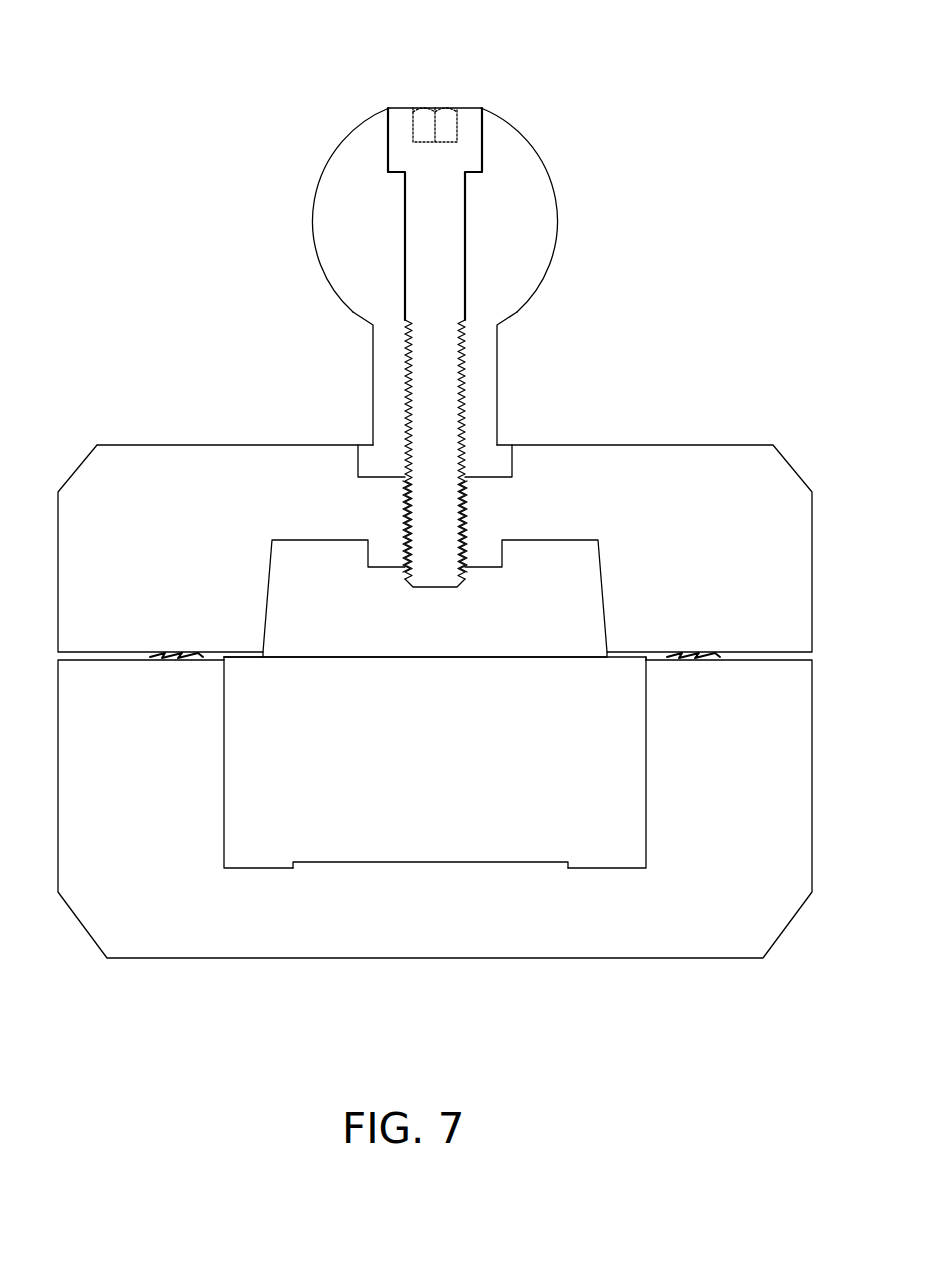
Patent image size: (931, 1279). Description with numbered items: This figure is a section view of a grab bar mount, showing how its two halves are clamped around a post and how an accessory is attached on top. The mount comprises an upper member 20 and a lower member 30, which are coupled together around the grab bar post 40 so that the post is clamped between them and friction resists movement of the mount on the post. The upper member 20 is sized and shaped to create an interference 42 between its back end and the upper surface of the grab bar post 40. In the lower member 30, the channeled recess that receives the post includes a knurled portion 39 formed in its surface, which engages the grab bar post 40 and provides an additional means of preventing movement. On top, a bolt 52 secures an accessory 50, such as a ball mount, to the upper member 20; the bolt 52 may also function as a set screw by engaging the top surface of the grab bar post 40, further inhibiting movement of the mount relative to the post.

The upper member 20 is at (680, 488).
The lower member 30 is at (712, 903).
The knurled portion 39 is at (502, 862).
The grab bar post 40 is at (287, 843).
The interference 42 is at (563, 537).
The accessory 50 is at (512, 212).
The bolt 52 is at (447, 177).